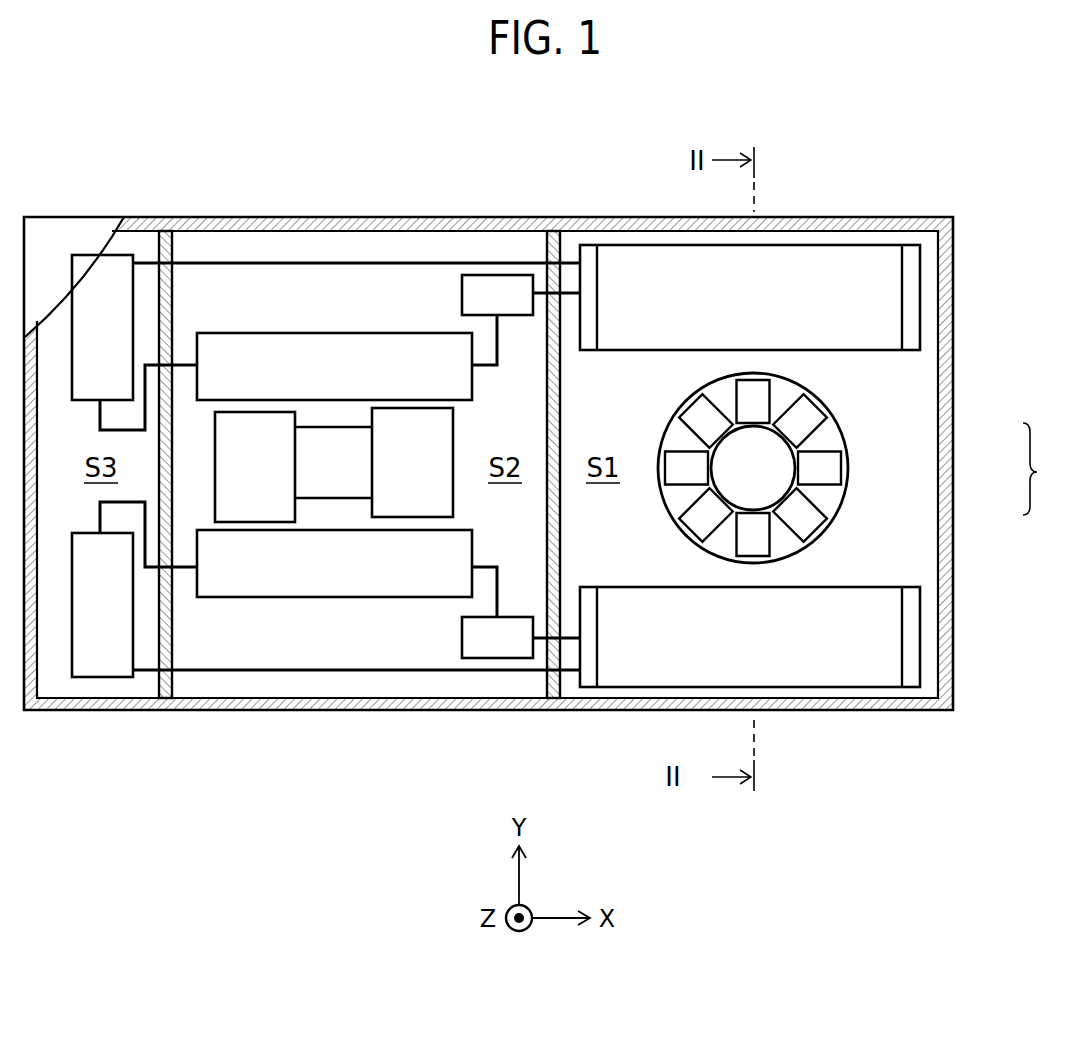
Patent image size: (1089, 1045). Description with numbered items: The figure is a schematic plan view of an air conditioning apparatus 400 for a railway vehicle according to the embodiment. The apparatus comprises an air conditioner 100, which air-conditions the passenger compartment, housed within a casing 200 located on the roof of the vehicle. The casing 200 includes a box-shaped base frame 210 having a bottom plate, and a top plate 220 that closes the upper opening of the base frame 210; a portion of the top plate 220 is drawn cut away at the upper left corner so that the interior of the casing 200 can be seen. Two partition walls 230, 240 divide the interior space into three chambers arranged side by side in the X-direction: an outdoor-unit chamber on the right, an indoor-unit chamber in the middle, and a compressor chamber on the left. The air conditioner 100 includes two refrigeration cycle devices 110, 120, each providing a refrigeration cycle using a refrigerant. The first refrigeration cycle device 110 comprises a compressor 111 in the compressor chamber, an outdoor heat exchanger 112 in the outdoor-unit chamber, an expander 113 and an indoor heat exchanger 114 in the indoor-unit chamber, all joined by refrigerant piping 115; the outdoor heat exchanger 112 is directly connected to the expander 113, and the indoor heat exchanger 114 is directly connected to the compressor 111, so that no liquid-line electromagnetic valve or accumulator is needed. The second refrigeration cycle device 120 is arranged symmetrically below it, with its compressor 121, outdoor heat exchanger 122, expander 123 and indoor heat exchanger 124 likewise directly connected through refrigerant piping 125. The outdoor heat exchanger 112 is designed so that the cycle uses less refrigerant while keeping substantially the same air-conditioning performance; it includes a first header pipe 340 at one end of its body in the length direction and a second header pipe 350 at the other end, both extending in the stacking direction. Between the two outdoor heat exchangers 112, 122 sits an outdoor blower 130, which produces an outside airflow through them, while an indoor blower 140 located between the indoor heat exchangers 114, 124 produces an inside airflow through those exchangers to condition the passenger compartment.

The air conditioner 100 is at (1055, 469).
The refrigeration cycle device 110 is at (857, 355).
The compressor 111 is at (80, 346).
The outdoor heat exchanger 112 is at (729, 312).
The expander 113 is at (475, 310).
The indoor heat exchanger 114 is at (312, 383).
The refrigerant piping 115 is at (334, 266).
The refrigeration cycle device 120 is at (850, 572).
The compressor 121 is at (80, 621).
The outdoor heat exchanger 122 is at (729, 652).
The expander 123 is at (475, 652).
The indoor heat exchanger 124 is at (312, 580).
The refrigerant piping 125 is at (334, 667).
The outdoor blower 130 is at (730, 481).
The indoor blower 140 is at (311, 479).
The casing 200 is at (488, 418).
The base frame 210 is at (343, 215).
The top plate 220 is at (86, 262).
The partition wall 230 is at (546, 688).
The partition wall 240 is at (163, 686).
The first header pipe 340 is at (588, 246).
The second header pipe 350 is at (909, 246).
The air conditioning apparatus for a railway vehicle 400 is at (492, 185).